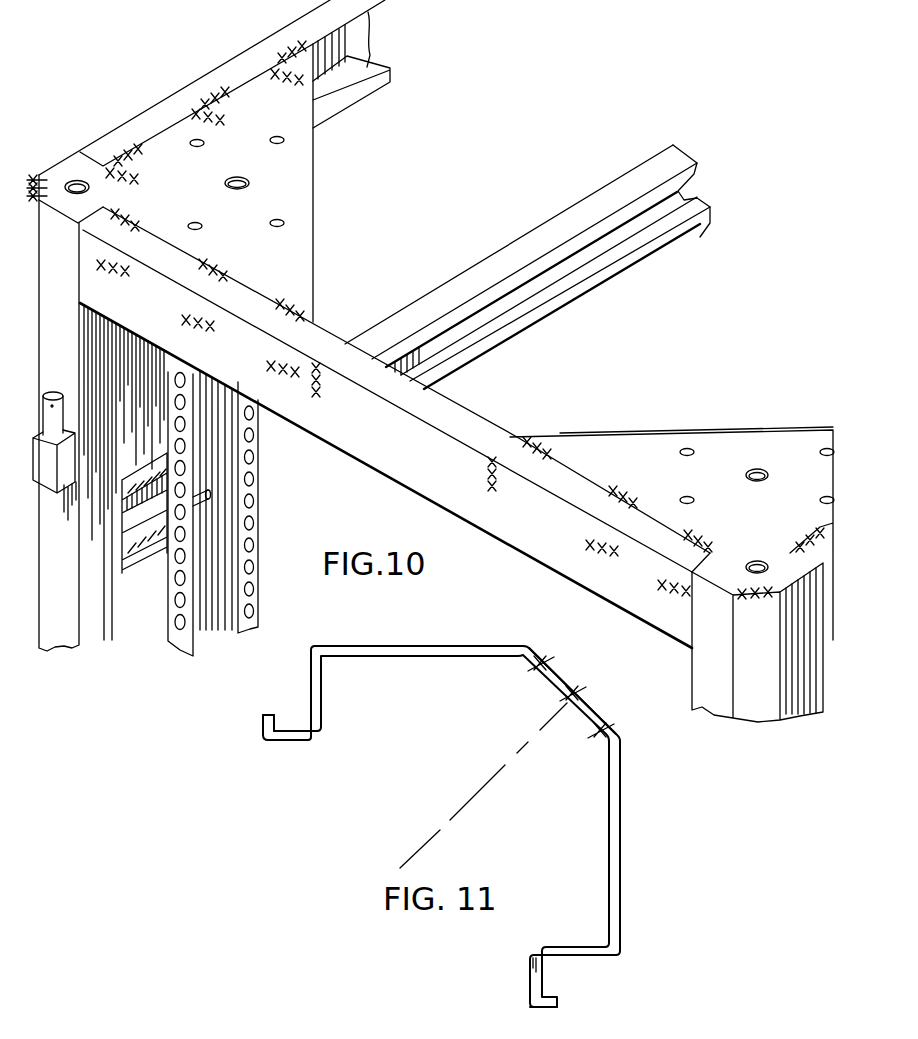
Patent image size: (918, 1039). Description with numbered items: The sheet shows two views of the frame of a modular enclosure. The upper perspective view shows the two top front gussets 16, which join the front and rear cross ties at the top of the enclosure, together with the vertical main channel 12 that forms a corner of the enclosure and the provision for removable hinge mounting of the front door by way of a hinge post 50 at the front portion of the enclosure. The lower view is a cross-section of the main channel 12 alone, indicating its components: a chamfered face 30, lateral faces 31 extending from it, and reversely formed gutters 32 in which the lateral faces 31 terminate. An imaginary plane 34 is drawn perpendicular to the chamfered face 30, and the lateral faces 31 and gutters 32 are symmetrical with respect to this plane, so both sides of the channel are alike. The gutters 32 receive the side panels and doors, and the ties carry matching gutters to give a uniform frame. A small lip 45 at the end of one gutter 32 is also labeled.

In FIG. 11, the main channel 12 is at (634, 845).
In FIG. 10, the gusset 16 is at (313, 263).
In FIG. 11, the chamfered face 30 is at (612, 730).
In FIG. 11, the lateral face 31 is at (443, 645).
In FIG. 11, the gutter 32 is at (290, 742).
In FIG. 11, the imaginary plane 34 is at (450, 815).
In FIG. 11, the lip 45 is at (273, 714).
In FIG. 10, the hinge post 50 is at (43, 461).